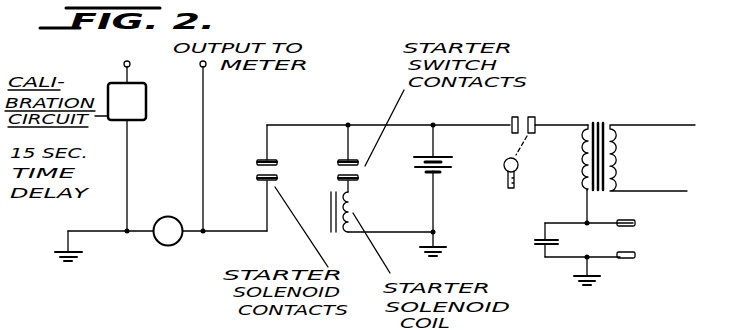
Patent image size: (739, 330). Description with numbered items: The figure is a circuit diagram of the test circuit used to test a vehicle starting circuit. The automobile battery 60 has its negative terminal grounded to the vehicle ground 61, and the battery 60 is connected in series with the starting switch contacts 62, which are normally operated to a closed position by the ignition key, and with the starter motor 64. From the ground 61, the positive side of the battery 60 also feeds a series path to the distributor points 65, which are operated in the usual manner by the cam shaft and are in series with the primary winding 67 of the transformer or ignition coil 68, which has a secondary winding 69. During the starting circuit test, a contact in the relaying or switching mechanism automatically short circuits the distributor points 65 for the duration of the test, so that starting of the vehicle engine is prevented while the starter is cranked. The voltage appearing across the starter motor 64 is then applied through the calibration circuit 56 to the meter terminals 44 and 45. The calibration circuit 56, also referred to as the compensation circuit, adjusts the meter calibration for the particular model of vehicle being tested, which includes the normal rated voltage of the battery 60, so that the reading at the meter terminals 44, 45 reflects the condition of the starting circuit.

The meter terminal 44 is at (200, 64).
The meter terminal 45 is at (125, 61).
The calibration circuit 56 is at (136, 111).
The automobile battery 60 is at (448, 165).
The vehicle ground 61 is at (452, 250).
The starting switch contacts 62 is at (530, 115).
The starter motor 64 is at (163, 245).
The distributor points 65 is at (632, 243).
The primary winding 67 is at (577, 165).
The ignition coil 68 is at (610, 116).
The secondary winding 69 is at (620, 180).